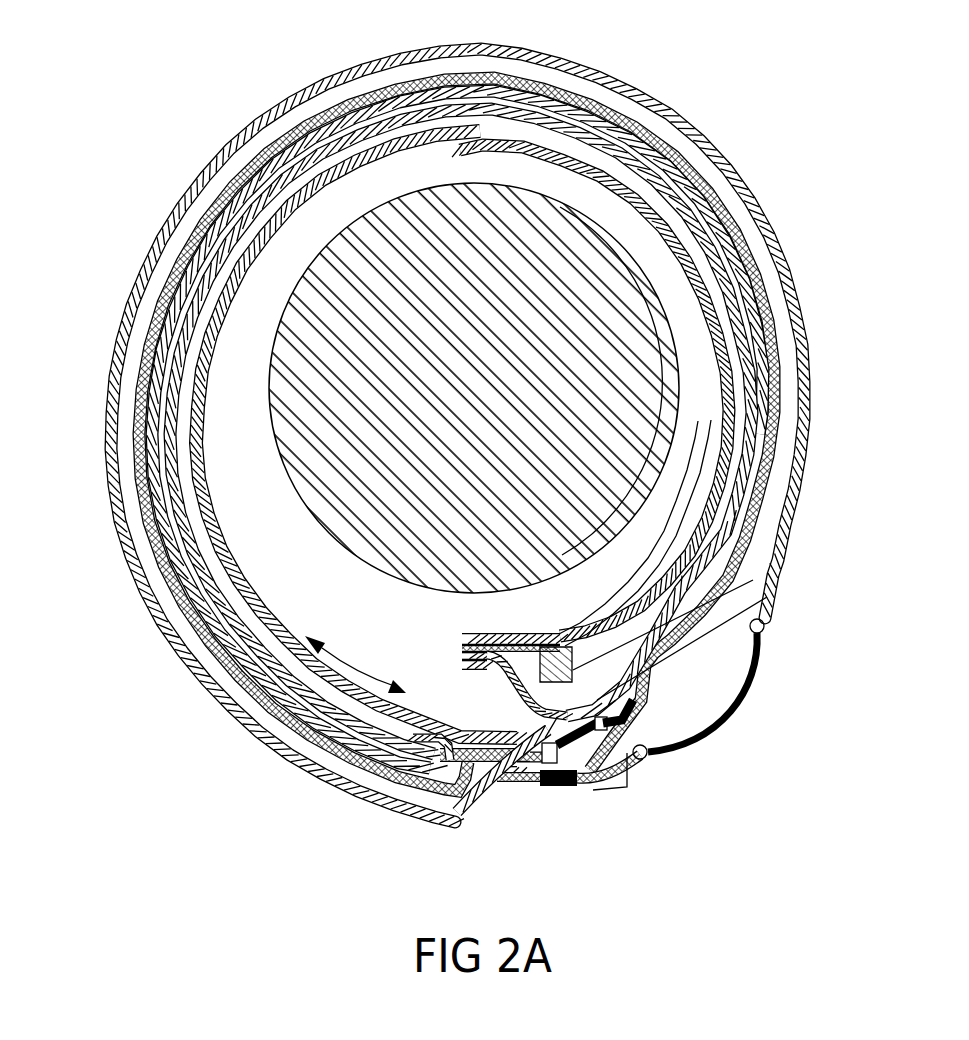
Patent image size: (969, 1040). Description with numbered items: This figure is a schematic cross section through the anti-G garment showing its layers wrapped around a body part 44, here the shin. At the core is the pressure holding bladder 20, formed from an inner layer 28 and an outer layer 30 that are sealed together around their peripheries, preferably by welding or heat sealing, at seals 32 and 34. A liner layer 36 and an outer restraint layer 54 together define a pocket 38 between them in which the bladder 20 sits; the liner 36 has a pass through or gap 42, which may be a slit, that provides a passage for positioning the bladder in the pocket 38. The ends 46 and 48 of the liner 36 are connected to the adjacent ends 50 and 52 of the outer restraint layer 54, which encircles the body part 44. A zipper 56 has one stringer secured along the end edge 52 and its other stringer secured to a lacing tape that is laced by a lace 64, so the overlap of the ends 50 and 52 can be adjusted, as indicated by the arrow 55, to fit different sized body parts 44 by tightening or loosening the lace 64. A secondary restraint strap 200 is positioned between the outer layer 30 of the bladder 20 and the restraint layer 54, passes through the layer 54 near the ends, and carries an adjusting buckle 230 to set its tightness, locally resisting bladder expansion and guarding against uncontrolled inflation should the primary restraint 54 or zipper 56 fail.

The pressure holding bladder 20 is at (423, 414).
The inner layer 28 is at (175, 452).
The outer layer 30 is at (160, 365).
The seal 32 is at (413, 757).
The seal 34 is at (637, 687).
The liner layer 36 is at (587, 173).
The pocket 38 is at (690, 232).
The pass through 42 is at (500, 118).
The body part 44 is at (607, 258).
The end of liner 46 is at (464, 632).
The end of liner 48 is at (500, 735).
The end of outer restraint layer 50 is at (482, 638).
The end of outer restraint layer 52 is at (500, 772).
The outer restraint layer 54 is at (312, 97).
The arrow 55 is at (355, 664).
The zipper 56 is at (572, 806).
The lace 64 is at (753, 672).
The secondary restraint strap 200 is at (238, 185).
The adjusting buckle 230 is at (590, 752).